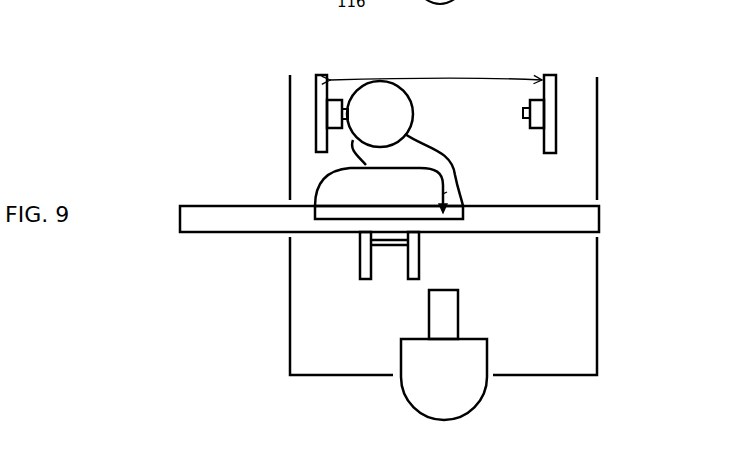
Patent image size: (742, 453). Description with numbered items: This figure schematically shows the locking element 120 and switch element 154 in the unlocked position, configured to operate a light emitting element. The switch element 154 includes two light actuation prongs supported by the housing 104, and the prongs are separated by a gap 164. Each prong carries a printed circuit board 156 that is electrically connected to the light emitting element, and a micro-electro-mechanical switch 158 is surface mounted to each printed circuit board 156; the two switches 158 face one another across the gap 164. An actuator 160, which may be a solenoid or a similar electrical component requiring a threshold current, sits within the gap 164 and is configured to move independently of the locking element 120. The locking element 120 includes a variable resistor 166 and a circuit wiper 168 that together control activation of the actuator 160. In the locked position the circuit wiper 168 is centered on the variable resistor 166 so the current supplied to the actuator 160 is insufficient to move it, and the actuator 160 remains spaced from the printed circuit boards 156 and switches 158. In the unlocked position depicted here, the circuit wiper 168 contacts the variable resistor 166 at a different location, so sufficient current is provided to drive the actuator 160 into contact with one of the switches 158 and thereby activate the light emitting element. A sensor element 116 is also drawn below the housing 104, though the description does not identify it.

The housing 104 is at (597, 170).
The sensor 116 is at (457, 393).
The locking element 120 is at (210, 222).
The switch element 154 is at (316, 72).
The printed circuit board 156 is at (325, 96).
The micro-electro-mechanical switch 158 is at (335, 115).
The actuator 160 is at (400, 120).
The gap 164 is at (483, 75).
The variable resistor 166 is at (353, 213).
The circuit wiper 168 is at (447, 192).